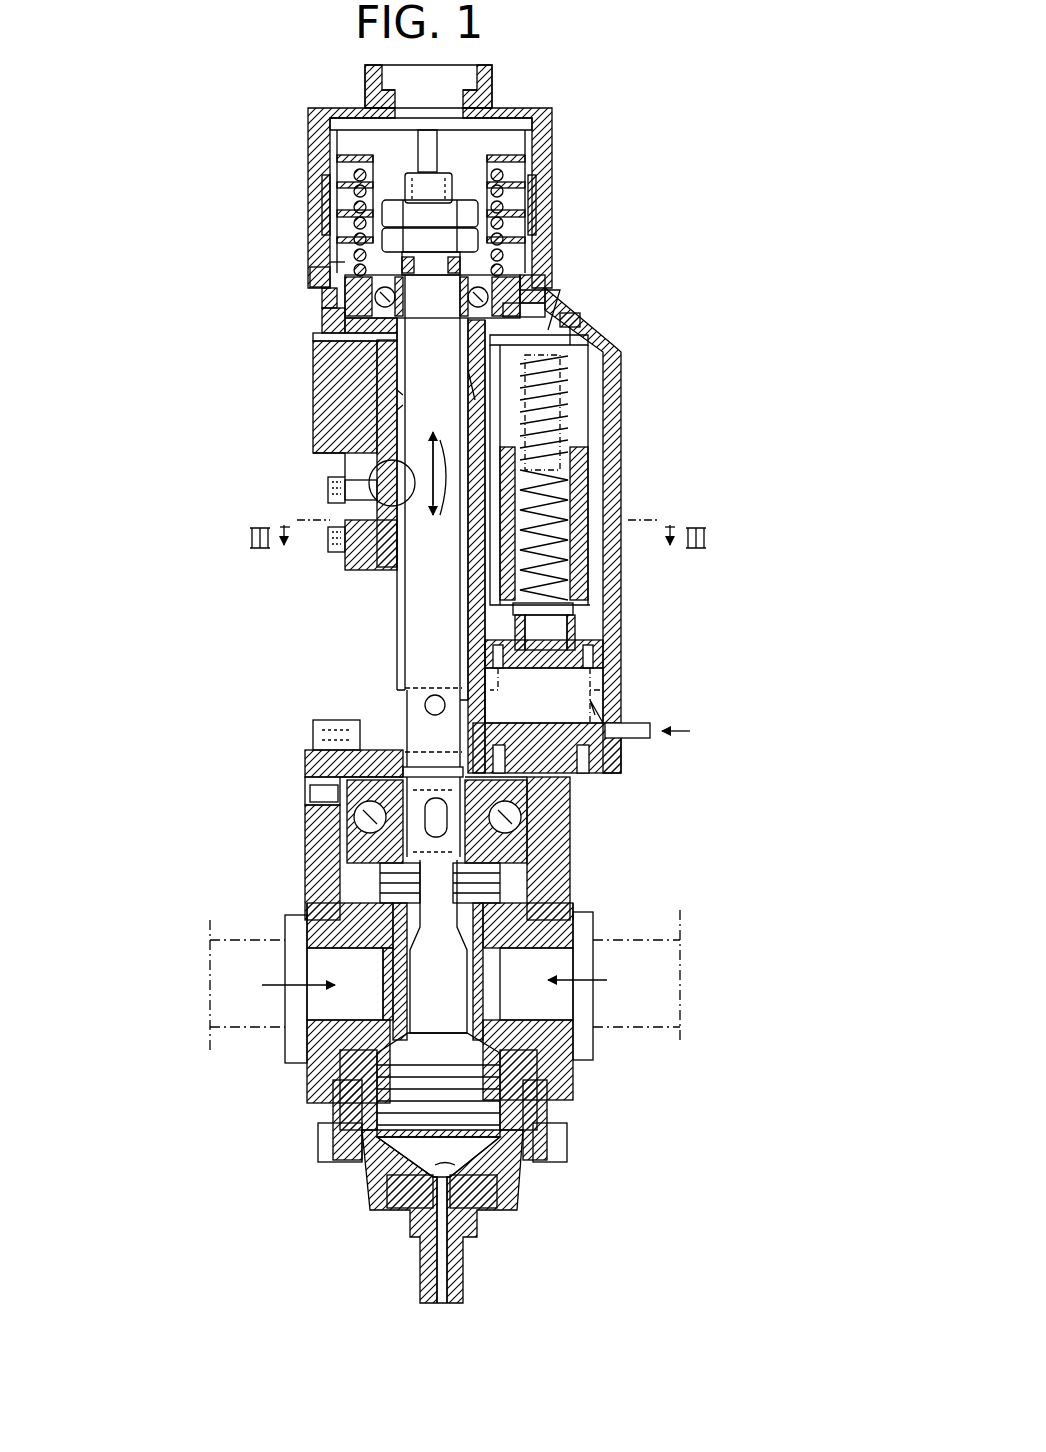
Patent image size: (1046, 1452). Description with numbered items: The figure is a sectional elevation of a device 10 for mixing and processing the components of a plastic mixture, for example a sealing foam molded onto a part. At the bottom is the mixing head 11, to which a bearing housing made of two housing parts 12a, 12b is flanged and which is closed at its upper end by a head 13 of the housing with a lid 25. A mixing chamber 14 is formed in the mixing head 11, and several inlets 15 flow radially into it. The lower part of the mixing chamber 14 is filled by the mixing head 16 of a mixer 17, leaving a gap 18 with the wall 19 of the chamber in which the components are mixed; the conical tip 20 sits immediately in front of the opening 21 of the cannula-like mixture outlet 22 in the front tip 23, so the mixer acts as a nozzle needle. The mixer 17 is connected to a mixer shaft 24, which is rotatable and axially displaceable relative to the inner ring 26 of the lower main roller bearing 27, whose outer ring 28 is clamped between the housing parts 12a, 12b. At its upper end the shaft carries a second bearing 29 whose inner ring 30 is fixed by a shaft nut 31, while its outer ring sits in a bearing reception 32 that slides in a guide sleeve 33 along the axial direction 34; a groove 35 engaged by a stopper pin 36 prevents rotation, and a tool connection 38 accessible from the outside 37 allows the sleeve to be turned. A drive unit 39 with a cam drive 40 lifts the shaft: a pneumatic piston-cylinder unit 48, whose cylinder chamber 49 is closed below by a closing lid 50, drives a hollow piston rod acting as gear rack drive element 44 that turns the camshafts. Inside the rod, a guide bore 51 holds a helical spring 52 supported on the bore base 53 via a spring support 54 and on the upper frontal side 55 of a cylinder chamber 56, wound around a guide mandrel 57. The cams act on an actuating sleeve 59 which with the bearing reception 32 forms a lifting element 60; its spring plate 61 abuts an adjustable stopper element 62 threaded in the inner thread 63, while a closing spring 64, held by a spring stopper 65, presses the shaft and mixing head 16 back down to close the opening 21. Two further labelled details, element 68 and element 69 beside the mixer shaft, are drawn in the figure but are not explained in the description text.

The device 10 is at (692, 787).
The mixing head 11 is at (565, 1047).
The housing part 12a is at (565, 853).
The housing part 12b is at (605, 462).
The head of housing 13 is at (548, 120).
The mixing chamber 14 is at (478, 980).
The inlets 15 is at (560, 1005).
The mixing head of mixer 16 is at (490, 1100).
The mixer 17 is at (398, 930).
The gap 18 is at (505, 1162).
The wall of mixing chamber 19 is at (500, 1180).
The tip 20 is at (470, 1200).
The opening 21 is at (462, 1225).
The mixture outlet 22 is at (444, 1282).
The front tip of mixing head 23 is at (420, 1267).
The mixer shaft 24 is at (405, 590).
The lid 25 is at (487, 103).
The inner ring 26 is at (365, 760).
The lower main roller bearing 27 is at (350, 757).
The outer ring 28 is at (362, 840).
The second bearing 29 is at (340, 307).
The inner ring 30 is at (525, 277).
The shaft nut 31 is at (395, 212).
The bearing reception 32 is at (325, 346).
The guide sleeve 33 is at (548, 335).
The axial direction 34 is at (446, 494).
The groove 35 is at (497, 297).
The stopper pin 36 is at (530, 305).
The outside of housing 37 is at (318, 252).
The tool connection 38 is at (328, 302).
The drive unit 39 is at (632, 562).
The cam drive 40 is at (358, 470).
The gear rack drive element 44 is at (580, 497).
The pneumatic piston-cylinder unit 48 is at (608, 632).
The cylinder chamber 49 is at (595, 676).
The closing lid 50 is at (560, 760).
The guide bore 51 is at (600, 405).
The helical spring 52 is at (565, 420).
The bore base 53 is at (567, 618).
The spring support 54 is at (555, 597).
The upper frontal side 55 is at (590, 340).
The cylinder chamber 56 is at (575, 392).
The guide mandrel 57 is at (542, 482).
The actuating sleeve 59 is at (377, 415).
The lifting element 60 is at (403, 393).
The spring plate 61 is at (335, 262).
The stopper element 62 is at (530, 212).
The inner thread 63 is at (325, 145).
The closing spring 64 is at (505, 175).
The spring stopper 65 is at (536, 190).
The shaft bore 68 is at (487, 385).
The sleeve 69 is at (380, 375).